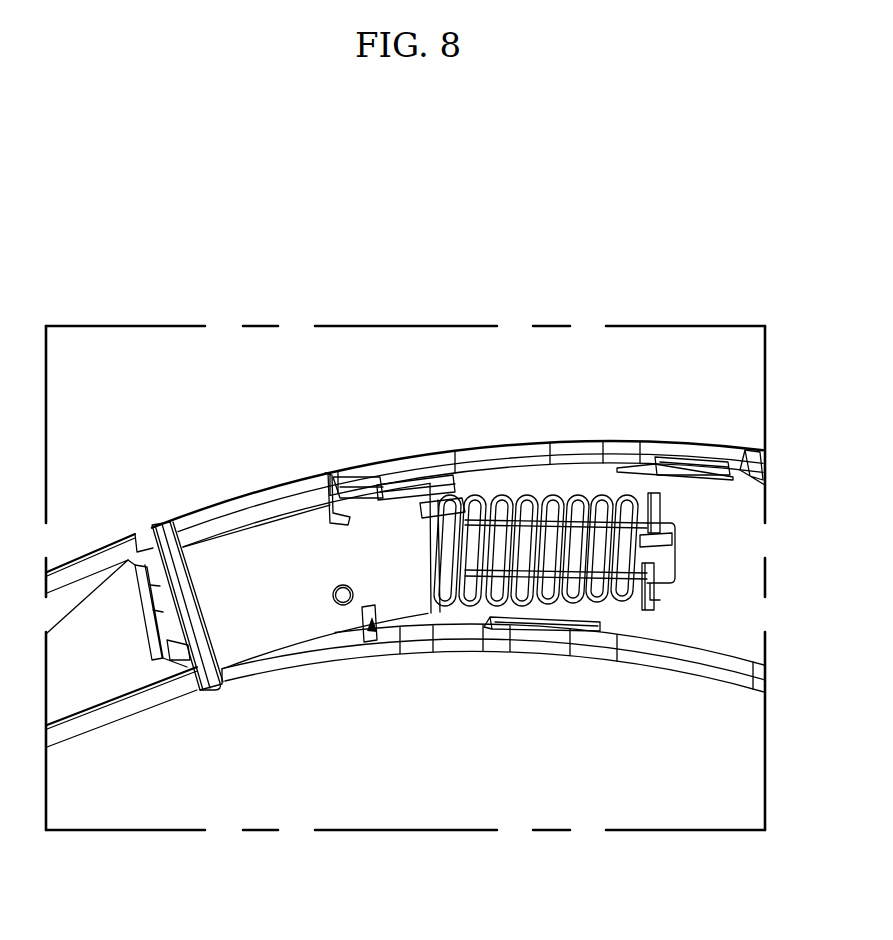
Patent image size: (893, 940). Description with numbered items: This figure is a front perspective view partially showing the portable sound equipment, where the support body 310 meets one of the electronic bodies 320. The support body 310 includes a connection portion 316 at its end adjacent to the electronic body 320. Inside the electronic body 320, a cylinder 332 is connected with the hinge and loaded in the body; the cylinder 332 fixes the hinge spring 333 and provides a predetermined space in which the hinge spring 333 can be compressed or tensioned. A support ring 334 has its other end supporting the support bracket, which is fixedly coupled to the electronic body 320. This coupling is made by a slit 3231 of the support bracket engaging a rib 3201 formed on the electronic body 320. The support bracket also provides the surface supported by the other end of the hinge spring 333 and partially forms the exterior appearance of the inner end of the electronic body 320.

The support body 310 is at (100, 628).
The connection portion 316 is at (100, 628).
The electronic body 320 is at (722, 557).
The rib 3201 is at (322, 485).
The cylinder 332 is at (167, 597).
The hinge spring 333 is at (563, 598).
The support ring 334 is at (655, 500).
The slit 3231 is at (378, 632).